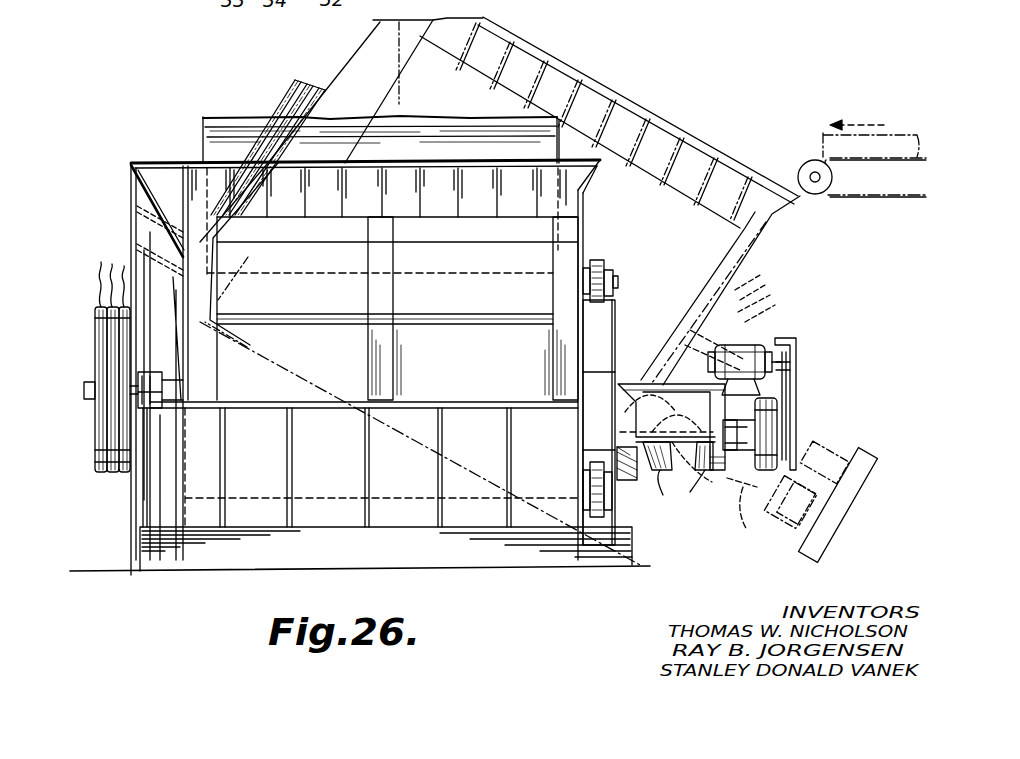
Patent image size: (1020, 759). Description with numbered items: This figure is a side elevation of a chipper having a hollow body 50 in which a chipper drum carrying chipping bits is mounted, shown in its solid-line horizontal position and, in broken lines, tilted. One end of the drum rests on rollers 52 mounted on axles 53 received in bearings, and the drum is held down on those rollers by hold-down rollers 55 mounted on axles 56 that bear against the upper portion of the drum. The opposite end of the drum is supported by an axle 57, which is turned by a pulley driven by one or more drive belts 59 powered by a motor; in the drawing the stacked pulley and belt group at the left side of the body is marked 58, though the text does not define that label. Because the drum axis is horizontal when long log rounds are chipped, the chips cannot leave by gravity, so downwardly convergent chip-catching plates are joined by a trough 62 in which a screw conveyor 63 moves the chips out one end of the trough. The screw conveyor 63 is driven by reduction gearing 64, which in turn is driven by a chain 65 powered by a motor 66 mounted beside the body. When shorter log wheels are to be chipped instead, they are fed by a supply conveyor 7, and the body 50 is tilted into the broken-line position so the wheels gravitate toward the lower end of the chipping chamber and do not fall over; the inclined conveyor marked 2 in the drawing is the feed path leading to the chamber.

The conveyor 2 is at (826, 131).
The supply conveyor 7 is at (806, 160).
The hollow body 50 is at (165, 206).
The rollers 52 is at (598, 525).
The axles 53 is at (637, 487).
The hold-down rollers 55 is at (601, 263).
The axles 56 is at (618, 283).
The axle 57 is at (84, 393).
The pulley stack 58 is at (95, 350).
The drive belts 59 is at (102, 277).
The trough 62 is at (647, 467).
The screw conveyor 63 is at (645, 445).
The reduction gearing 64 is at (772, 421).
The chain 65 is at (790, 382).
The motor 66 is at (760, 345).